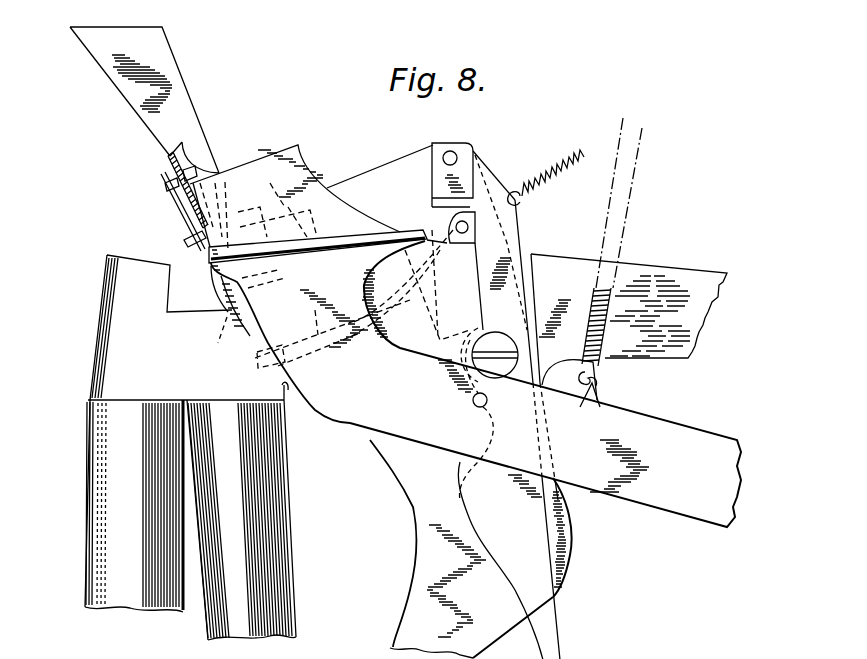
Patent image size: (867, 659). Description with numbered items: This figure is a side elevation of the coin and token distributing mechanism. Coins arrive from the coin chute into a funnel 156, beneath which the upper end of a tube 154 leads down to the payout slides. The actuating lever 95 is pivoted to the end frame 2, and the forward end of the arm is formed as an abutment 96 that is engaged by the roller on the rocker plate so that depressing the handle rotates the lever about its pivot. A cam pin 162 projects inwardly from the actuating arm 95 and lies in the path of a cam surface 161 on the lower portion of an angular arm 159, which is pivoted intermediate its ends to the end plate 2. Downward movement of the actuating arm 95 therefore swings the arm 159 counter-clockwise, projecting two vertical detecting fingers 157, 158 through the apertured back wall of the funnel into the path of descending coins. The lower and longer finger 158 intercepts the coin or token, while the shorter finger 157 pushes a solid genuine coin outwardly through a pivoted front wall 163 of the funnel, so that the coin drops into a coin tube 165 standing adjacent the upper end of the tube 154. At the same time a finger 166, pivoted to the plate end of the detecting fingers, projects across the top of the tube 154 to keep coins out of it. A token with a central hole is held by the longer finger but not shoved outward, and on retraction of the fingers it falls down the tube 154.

The funnel 156 is at (205, 142).
The detecting finger 157 is at (292, 141).
The detecting finger 158 is at (341, 183).
The abutment 96 is at (348, 237).
The angular arm 159 is at (502, 237).
The end frame 2 is at (686, 346).
The finger 166 is at (281, 300).
The front wall 163 is at (186, 311).
The actuating lever 95 is at (520, 384).
The cam pin 162 is at (473, 405).
The cam surface 161 is at (473, 460).
The coin tube 165 is at (88, 543).
The tube 154 is at (293, 562).